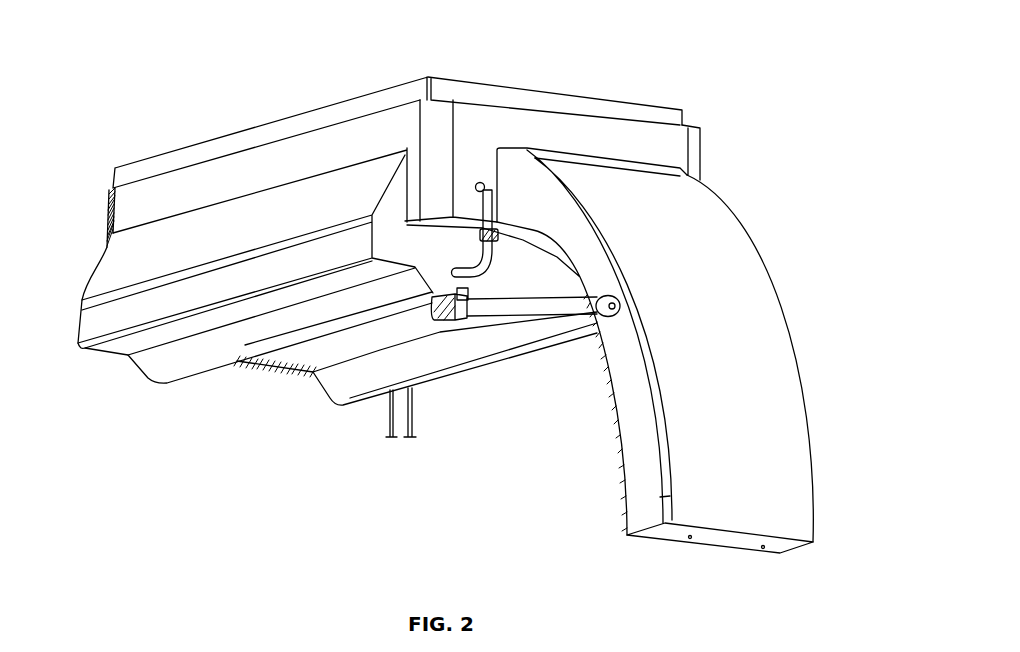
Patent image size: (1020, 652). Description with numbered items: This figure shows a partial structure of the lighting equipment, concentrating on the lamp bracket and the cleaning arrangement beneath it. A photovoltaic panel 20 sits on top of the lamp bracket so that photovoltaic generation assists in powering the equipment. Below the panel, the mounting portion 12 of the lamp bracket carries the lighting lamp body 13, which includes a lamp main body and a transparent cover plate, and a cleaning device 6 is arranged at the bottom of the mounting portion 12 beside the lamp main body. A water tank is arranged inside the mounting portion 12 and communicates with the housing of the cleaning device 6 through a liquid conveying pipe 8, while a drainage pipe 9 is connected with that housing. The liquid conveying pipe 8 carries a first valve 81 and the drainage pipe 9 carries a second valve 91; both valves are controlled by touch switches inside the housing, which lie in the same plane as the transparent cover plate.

The photovoltaic panel 20 is at (380, 89).
The cleaning device 6 is at (123, 313).
The mounting portion 12 is at (610, 138).
The lighting lamp body 13 is at (323, 353).
The liquid conveying pipe 8 is at (478, 183).
The first valve 81 is at (498, 227).
The drainage pipe 9 is at (510, 311).
The second valve 91 is at (462, 321).